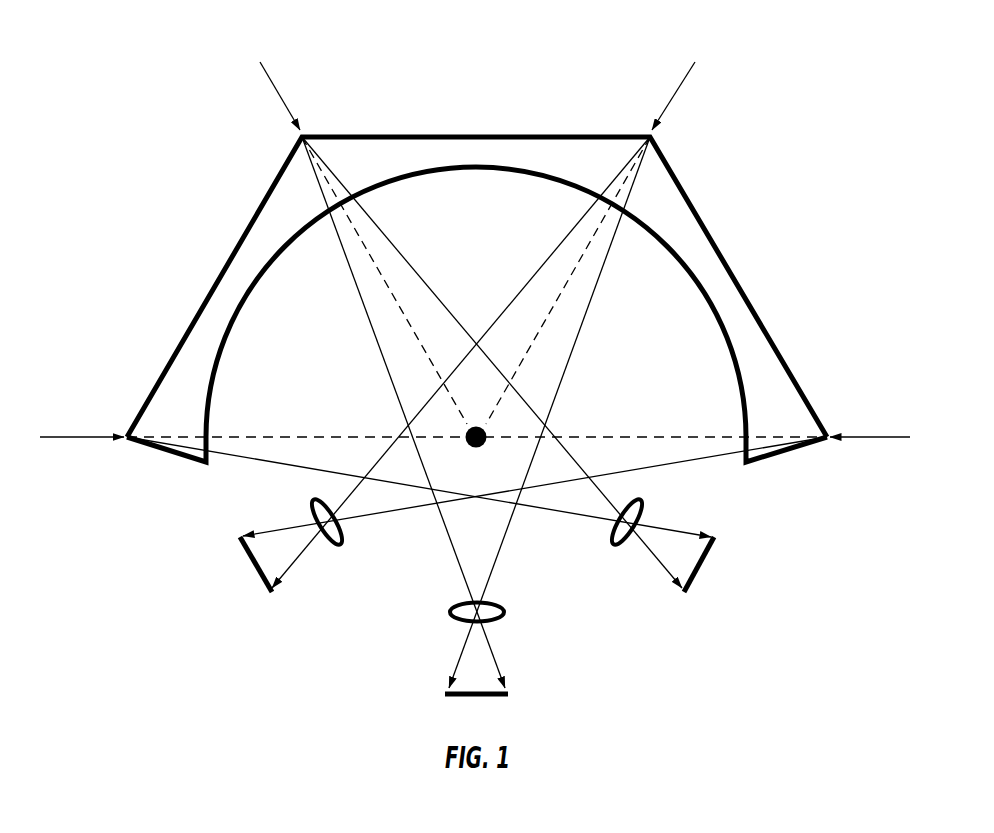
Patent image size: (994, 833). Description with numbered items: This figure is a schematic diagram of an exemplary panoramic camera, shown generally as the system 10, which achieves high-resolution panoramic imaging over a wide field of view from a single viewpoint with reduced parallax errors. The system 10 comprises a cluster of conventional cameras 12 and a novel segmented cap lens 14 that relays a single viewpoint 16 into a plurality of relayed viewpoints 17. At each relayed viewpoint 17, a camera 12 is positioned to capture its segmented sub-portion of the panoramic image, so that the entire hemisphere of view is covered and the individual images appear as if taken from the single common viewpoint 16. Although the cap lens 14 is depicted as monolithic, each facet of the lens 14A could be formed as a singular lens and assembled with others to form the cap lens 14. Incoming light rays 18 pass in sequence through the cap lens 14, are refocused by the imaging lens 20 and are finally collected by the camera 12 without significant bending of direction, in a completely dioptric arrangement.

The system 10 is at (477, 284).
The camera 12 is at (432, 694).
The segmented cap lens 14 is at (735, 271).
The facet of the lens 14A is at (243, 273).
The single viewpoint 16 is at (461, 431).
The relayed viewpoint 17 is at (318, 521).
The incoming light rays 18 is at (670, 90).
The imaging lens 20 is at (437, 613).